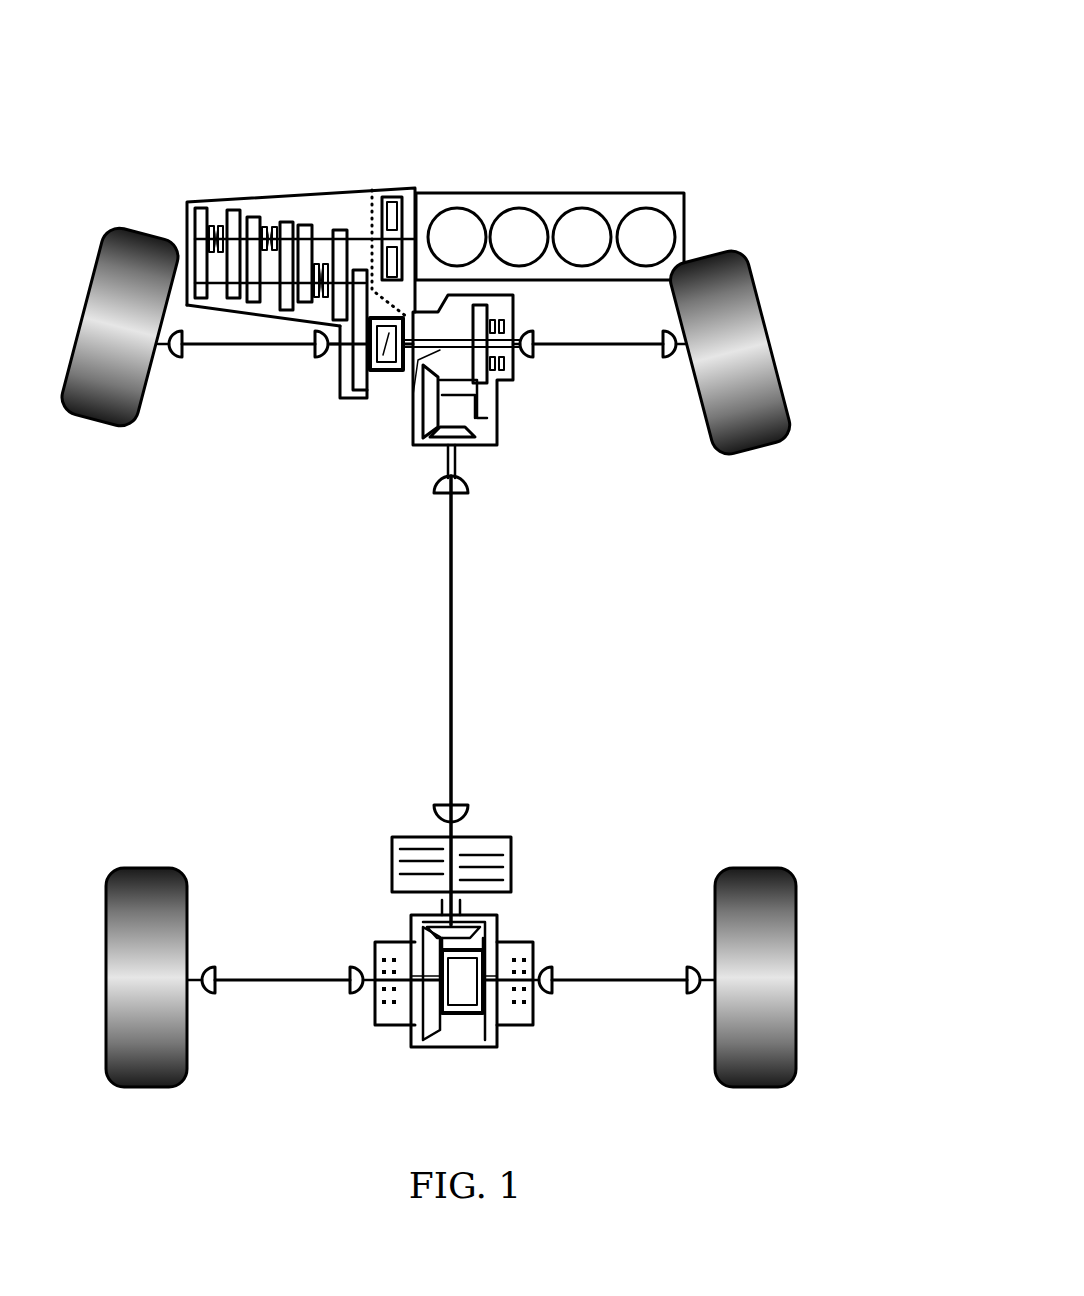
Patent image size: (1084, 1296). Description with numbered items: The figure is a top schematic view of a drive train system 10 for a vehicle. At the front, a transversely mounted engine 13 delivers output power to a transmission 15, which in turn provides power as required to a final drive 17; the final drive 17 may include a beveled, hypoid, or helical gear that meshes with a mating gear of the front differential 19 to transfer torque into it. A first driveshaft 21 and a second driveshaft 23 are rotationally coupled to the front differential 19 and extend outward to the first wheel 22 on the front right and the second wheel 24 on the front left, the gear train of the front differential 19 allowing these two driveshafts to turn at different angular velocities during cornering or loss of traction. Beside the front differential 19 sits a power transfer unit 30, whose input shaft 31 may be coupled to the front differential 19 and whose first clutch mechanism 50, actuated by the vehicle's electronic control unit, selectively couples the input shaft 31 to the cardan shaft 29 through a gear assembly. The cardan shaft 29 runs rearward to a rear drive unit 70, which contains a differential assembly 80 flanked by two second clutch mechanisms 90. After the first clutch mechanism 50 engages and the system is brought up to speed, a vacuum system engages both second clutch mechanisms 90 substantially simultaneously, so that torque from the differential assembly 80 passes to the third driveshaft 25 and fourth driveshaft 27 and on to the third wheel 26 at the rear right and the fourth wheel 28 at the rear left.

The drive train system 10 is at (692, 105).
The engine 13 is at (498, 215).
The transmission 15 is at (334, 212).
The final drive 17 is at (345, 395).
The front differential 19 is at (375, 395).
The first driveshaft 21 is at (636, 350).
The first wheel 22 is at (730, 462).
The second driveshaft 23 is at (278, 350).
The second wheel 24 is at (107, 455).
The third driveshaft 25 is at (570, 975).
The third wheel 26 is at (780, 866).
The fourth driveshaft 27 is at (338, 975).
The fourth wheel 28 is at (128, 866).
The cardan shaft 29 is at (470, 605).
The power transfer unit 30 is at (508, 424).
The input shaft 31 is at (420, 388).
The first clutch mechanism 50 is at (532, 380).
The rear drive unit 70 is at (555, 880).
The differential assembly 80 is at (464, 1030).
The second clutch mechanisms 90 is at (350, 1022).